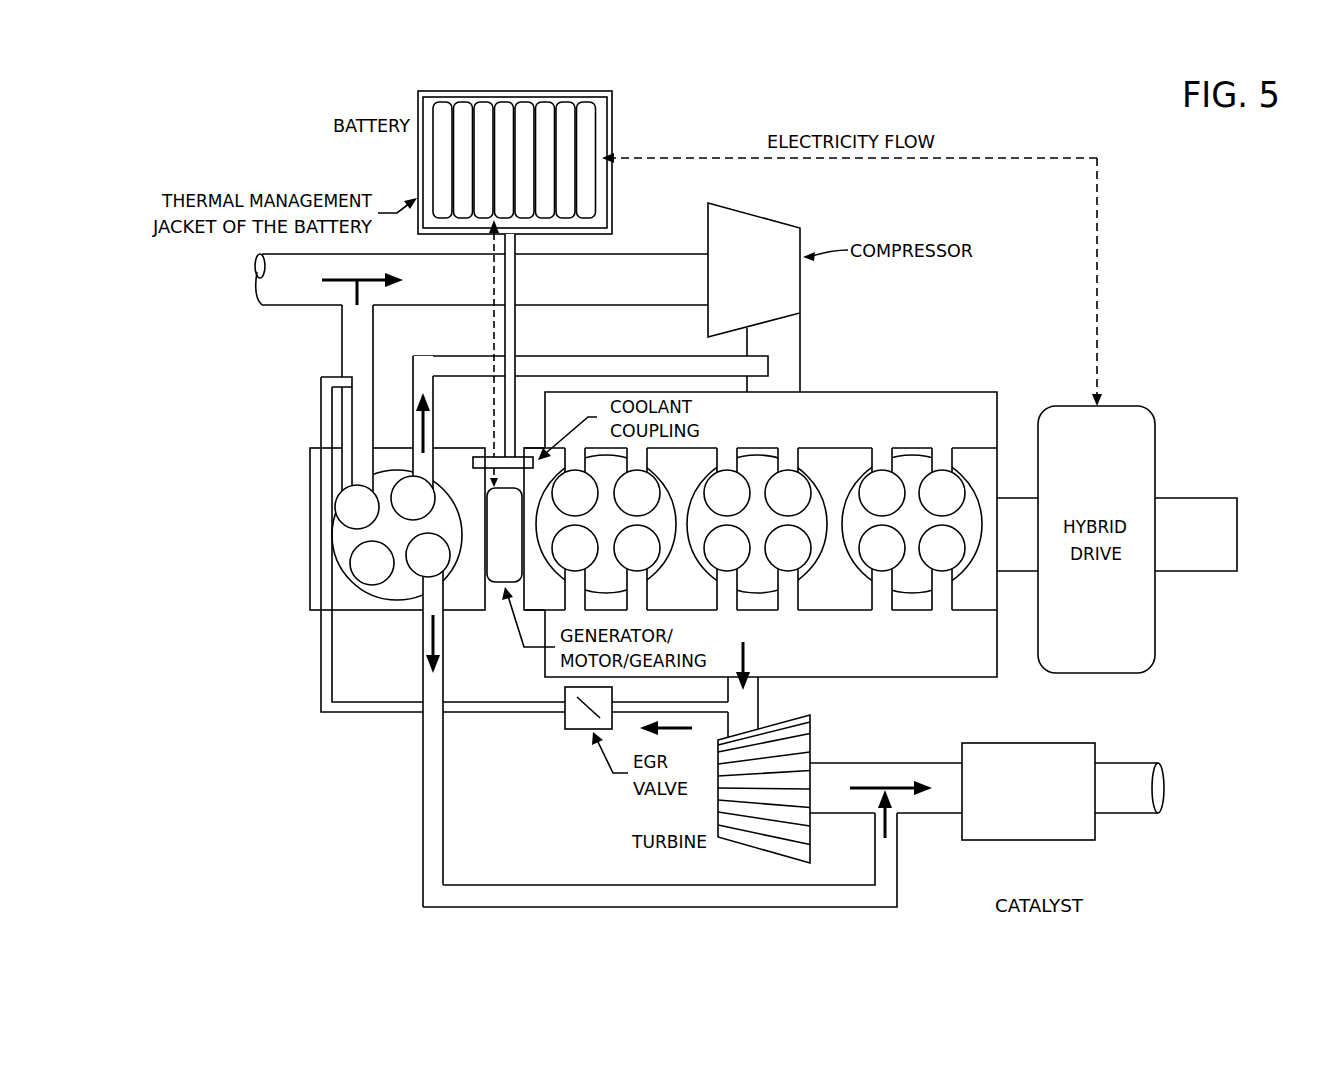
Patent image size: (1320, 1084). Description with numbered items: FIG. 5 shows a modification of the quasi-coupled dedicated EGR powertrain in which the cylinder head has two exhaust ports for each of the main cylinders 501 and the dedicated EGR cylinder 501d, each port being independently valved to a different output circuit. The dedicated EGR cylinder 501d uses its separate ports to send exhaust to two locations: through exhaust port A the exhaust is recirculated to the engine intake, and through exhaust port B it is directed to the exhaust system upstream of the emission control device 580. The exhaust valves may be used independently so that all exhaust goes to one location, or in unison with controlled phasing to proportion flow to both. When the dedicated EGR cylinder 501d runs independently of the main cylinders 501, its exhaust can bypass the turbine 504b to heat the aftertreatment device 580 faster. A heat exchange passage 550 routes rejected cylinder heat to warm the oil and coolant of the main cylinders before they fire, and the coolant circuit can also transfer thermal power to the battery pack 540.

The battery pack 540 is at (432, 165).
The heat exchange passage 550 is at (517, 339).
The main cylinders 501 is at (942, 478).
The dedicated EGR cylinder 501d is at (397, 597).
The turbine 504b is at (717, 803).
The emission control device 580 is at (1028, 842).